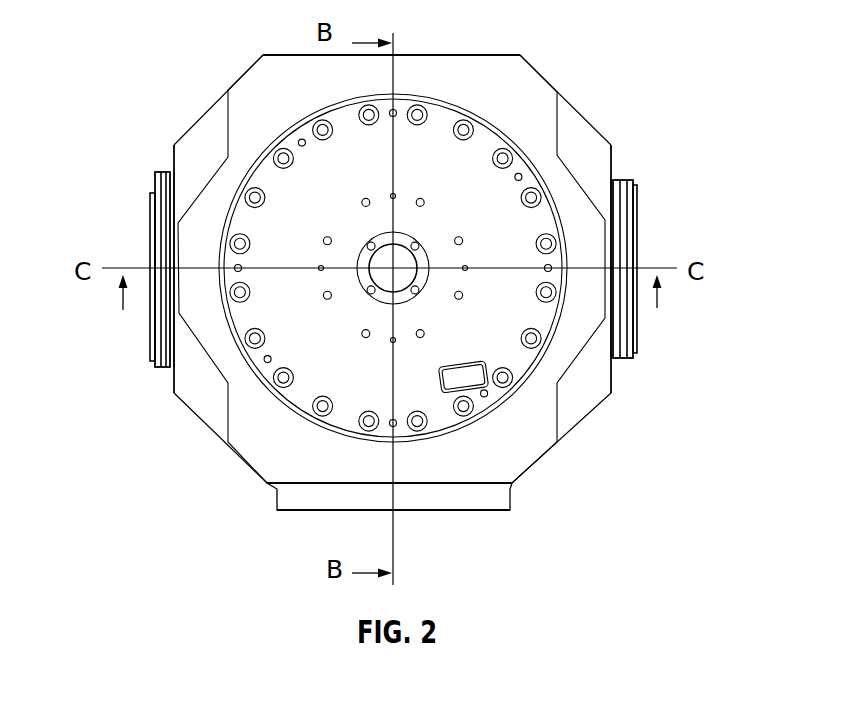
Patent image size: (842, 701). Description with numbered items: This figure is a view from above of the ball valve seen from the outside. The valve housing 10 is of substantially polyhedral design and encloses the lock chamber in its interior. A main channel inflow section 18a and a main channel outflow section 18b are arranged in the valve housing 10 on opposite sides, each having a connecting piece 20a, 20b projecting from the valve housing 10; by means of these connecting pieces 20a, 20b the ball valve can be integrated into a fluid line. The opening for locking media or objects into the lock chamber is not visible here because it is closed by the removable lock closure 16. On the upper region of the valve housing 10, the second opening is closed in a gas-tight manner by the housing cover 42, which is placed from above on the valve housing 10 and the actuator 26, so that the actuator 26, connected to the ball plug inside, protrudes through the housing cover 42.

The valve housing 10 is at (545, 112).
The lock closure 16 is at (480, 502).
The main channel inflow section 18a is at (665, 232).
The main channel outflow section 18b is at (124, 232).
The connecting piece 20a is at (627, 202).
The connecting piece 20b is at (157, 197).
The actuator 26 is at (402, 257).
The housing cover 42 is at (337, 173).